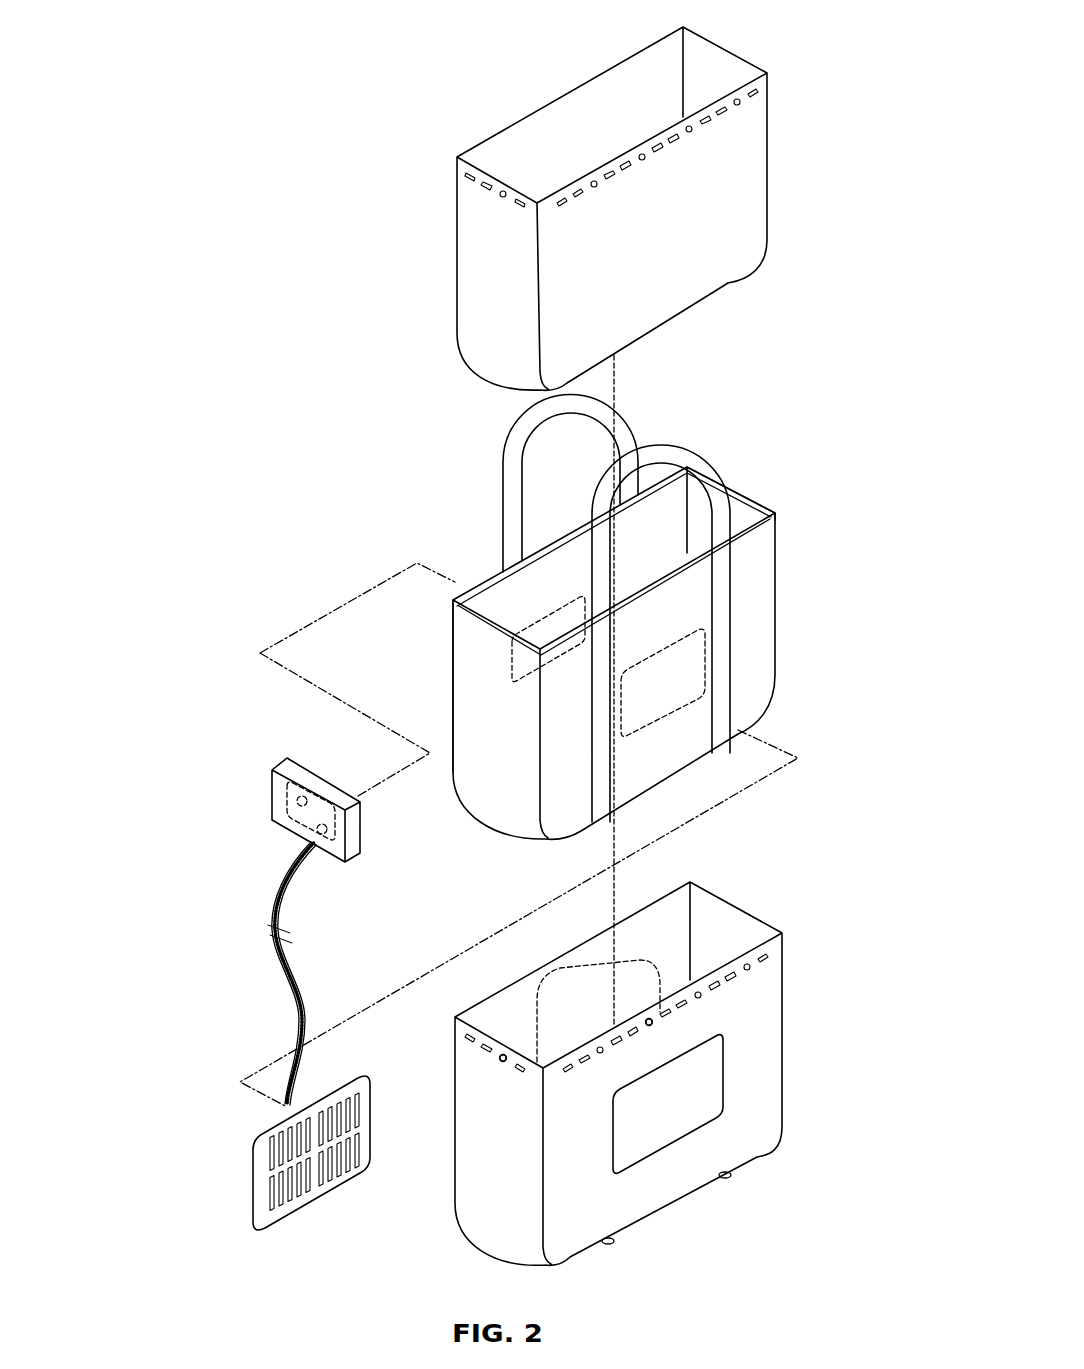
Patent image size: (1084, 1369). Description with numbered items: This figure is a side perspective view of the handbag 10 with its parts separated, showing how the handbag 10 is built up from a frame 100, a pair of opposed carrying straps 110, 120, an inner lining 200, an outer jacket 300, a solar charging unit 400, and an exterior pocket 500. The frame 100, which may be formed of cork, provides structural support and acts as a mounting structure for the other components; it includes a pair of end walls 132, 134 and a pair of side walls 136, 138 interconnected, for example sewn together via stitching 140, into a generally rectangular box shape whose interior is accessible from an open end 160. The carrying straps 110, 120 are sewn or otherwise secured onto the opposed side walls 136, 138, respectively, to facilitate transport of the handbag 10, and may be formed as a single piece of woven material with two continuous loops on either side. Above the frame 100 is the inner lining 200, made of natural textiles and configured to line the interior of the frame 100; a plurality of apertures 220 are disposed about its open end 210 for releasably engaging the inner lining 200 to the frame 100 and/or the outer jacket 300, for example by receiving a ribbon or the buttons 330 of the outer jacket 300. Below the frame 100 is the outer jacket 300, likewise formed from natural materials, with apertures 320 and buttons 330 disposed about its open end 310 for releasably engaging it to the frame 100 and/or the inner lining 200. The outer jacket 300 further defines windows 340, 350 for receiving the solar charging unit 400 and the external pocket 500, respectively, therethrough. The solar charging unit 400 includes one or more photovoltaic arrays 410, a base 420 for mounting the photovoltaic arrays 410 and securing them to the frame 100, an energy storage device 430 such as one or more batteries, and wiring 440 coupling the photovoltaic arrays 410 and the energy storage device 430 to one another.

The handbag 10 is at (167, 298).
The frame 100 is at (437, 530).
The carrying strap 110 is at (720, 472).
The carrying strap 120 is at (513, 475).
The end wall 132 is at (780, 527).
The end wall 134 is at (465, 647).
The side wall 136 is at (697, 704).
The side wall 138 is at (587, 517).
The stitching 140 is at (783, 537).
The open end 160 is at (757, 500).
The inner lining 200 is at (487, 100).
The open end 210 is at (733, 44).
The apertures 220 is at (713, 113).
The outer jacket 300 is at (818, 922).
The open end 310 is at (727, 903).
The apertures 320 is at (757, 960).
The buttons 330 is at (670, 1017).
The window 340 is at (675, 1105).
The window 350 is at (560, 1035).
The solar charging unit 400 is at (200, 752).
The photovoltaic arrays 410 is at (312, 1197).
The base 420 is at (270, 1223).
The energy storage device 430 is at (292, 823).
The wiring 440 is at (293, 1010).
The exterior pocket 500 is at (308, 782).